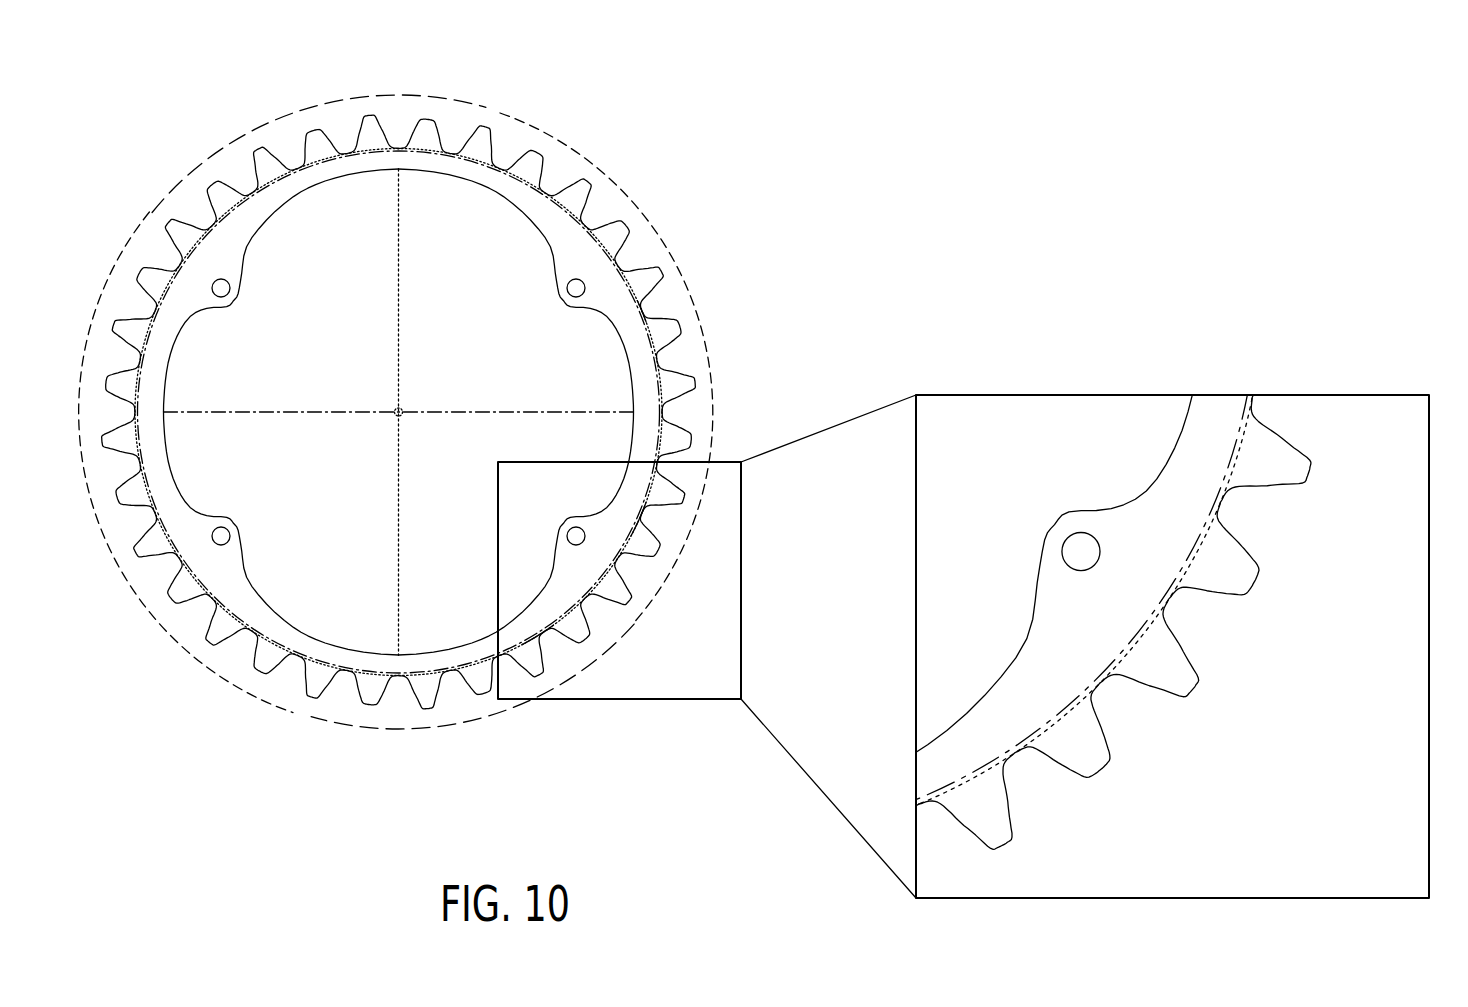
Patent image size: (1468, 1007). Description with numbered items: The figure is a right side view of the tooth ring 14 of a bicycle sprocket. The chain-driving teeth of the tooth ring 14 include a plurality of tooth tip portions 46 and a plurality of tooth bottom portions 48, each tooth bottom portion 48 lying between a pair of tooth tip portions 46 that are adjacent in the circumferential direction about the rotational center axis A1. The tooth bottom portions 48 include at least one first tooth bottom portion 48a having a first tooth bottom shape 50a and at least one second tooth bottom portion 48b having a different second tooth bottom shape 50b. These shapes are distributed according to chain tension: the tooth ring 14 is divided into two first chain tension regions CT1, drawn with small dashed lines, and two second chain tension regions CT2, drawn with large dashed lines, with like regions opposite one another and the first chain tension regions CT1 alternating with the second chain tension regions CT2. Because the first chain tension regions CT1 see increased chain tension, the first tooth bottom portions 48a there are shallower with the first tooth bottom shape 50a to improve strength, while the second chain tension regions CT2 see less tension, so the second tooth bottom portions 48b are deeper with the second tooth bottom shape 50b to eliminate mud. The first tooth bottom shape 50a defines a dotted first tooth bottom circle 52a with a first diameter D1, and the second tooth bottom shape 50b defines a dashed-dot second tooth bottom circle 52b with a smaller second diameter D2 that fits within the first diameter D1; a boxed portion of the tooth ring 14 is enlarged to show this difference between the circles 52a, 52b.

The tooth ring 14 is at (769, 461).
The tooth tip portions 46 is at (662, 273).
The tooth bottom portions 48 is at (642, 308).
The first tooth bottom portion 48a is at (640, 512).
The second tooth bottom portion 48b is at (542, 632).
The first tooth bottom shape 50a is at (653, 527).
The second tooth bottom shape 50b is at (543, 645).
The first tooth bottom circle 52a is at (502, 165).
The second tooth bottom circle 52b is at (537, 191).
The rotational center axis A1 is at (398, 412).
The first diameter D1 is at (377, 412).
The second diameter D2 is at (399, 392).
The first chain tension regions CT1 is at (641, 200).
The second chain tension regions CT2 is at (283, 112).